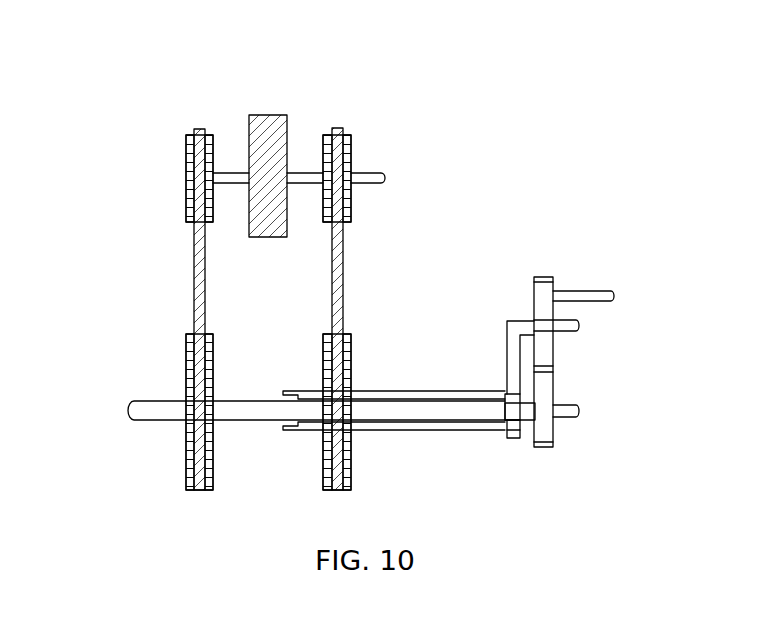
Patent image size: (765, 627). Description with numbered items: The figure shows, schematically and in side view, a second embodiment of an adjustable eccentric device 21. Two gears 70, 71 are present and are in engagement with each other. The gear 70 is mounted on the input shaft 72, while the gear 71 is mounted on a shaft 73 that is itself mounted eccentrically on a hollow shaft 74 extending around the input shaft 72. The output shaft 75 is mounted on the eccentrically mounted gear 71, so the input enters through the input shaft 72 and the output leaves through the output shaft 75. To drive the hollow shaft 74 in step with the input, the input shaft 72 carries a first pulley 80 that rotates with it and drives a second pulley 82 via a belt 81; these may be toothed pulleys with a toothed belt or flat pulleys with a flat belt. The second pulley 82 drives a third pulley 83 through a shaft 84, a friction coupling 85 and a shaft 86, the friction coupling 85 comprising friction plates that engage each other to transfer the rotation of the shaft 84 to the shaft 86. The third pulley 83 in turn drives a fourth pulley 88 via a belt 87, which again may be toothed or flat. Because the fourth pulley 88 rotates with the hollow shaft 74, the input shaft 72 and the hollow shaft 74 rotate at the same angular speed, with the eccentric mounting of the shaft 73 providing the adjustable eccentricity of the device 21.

The adjustable eccentric device 21 is at (596, 345).
The gear 70 is at (553, 432).
The gear 71 is at (545, 280).
The input shaft 72 is at (490, 418).
The shaft 73 is at (582, 325).
The hollow shaft 74 is at (464, 390).
The output shaft 75 is at (585, 295).
The first pulley 80 is at (188, 487).
The belt 81 is at (194, 296).
The second pulley 82 is at (209, 133).
The third pulley 83 is at (348, 216).
The shaft 84 is at (233, 186).
The friction coupling 85 is at (276, 113).
The shaft 86 is at (305, 186).
The belt 87 is at (343, 294).
The fourth pulley 88 is at (324, 346).